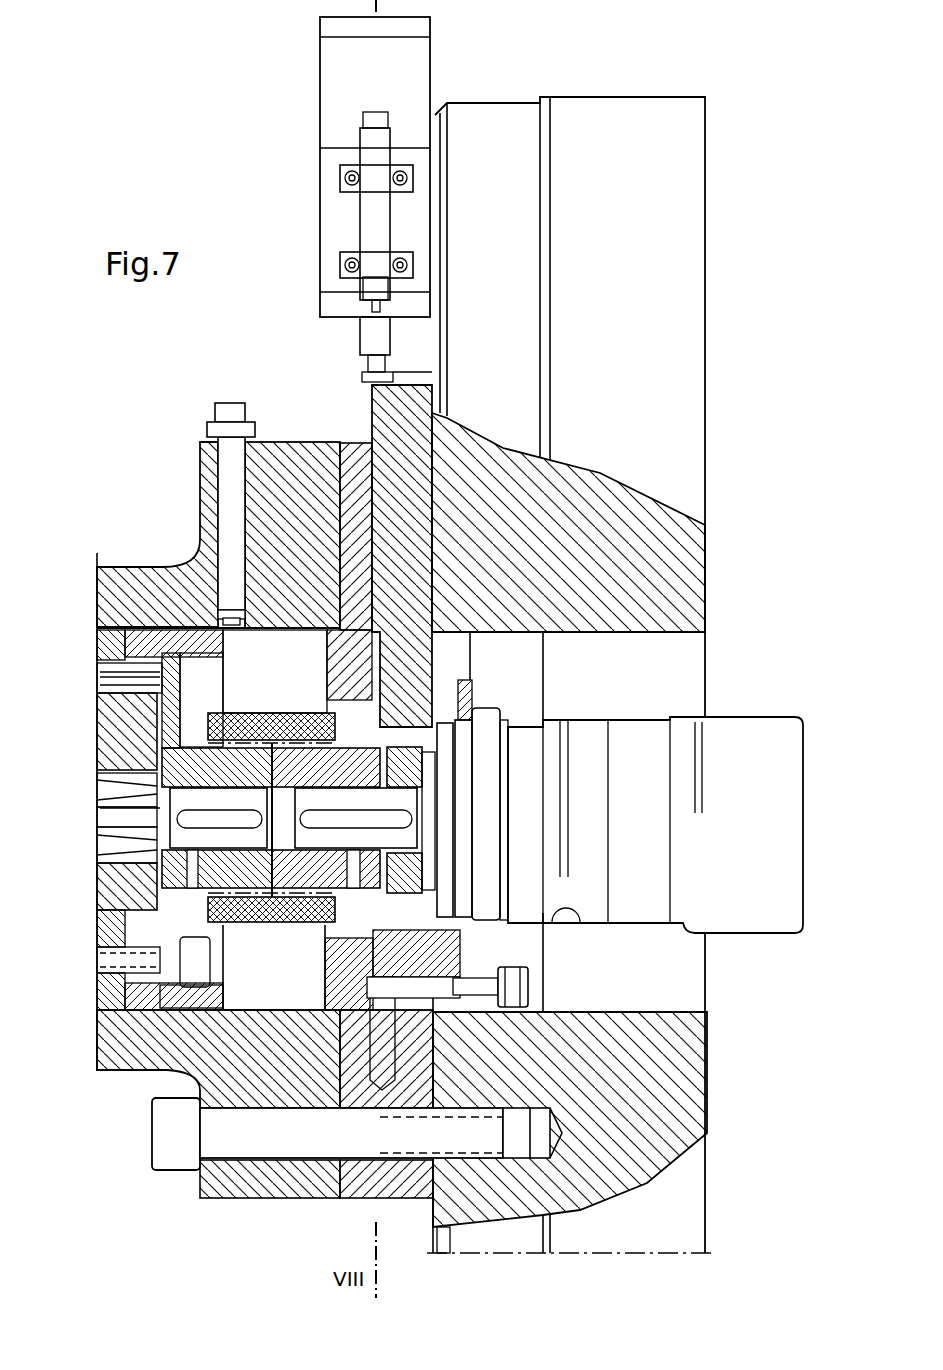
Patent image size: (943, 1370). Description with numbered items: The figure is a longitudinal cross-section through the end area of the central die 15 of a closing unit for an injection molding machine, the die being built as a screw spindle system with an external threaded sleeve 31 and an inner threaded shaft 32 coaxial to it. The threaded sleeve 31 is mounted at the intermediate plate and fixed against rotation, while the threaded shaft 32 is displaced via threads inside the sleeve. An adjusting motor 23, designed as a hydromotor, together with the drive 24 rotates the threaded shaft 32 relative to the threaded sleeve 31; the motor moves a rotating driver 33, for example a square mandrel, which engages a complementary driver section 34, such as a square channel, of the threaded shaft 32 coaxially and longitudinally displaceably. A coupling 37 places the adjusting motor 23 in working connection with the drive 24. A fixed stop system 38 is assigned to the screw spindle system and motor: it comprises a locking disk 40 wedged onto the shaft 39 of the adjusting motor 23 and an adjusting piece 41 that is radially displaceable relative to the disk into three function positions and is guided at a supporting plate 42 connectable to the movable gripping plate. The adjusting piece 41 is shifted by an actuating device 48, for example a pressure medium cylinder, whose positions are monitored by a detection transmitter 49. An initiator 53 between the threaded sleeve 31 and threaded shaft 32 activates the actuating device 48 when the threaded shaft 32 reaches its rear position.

The central die 15 is at (157, 587).
The adjusting motor 23 is at (725, 765).
The drive 24 is at (130, 798).
The threaded sleeve 31 is at (120, 597).
The threaded shaft 32 is at (120, 888).
The rotating driver 33 is at (112, 842).
The driver section 34 is at (110, 767).
The coupling 37 is at (305, 877).
The fixed stop system 38 is at (423, 748).
The shaft of the adjusting motor 39 is at (370, 840).
The locking disk 40 is at (410, 855).
The adjusting piece 41 is at (405, 470).
The supporting plate 42 is at (680, 185).
The actuating device 48 is at (372, 345).
The detection transmitter 49 is at (370, 230).
The initiator 53 is at (230, 490).